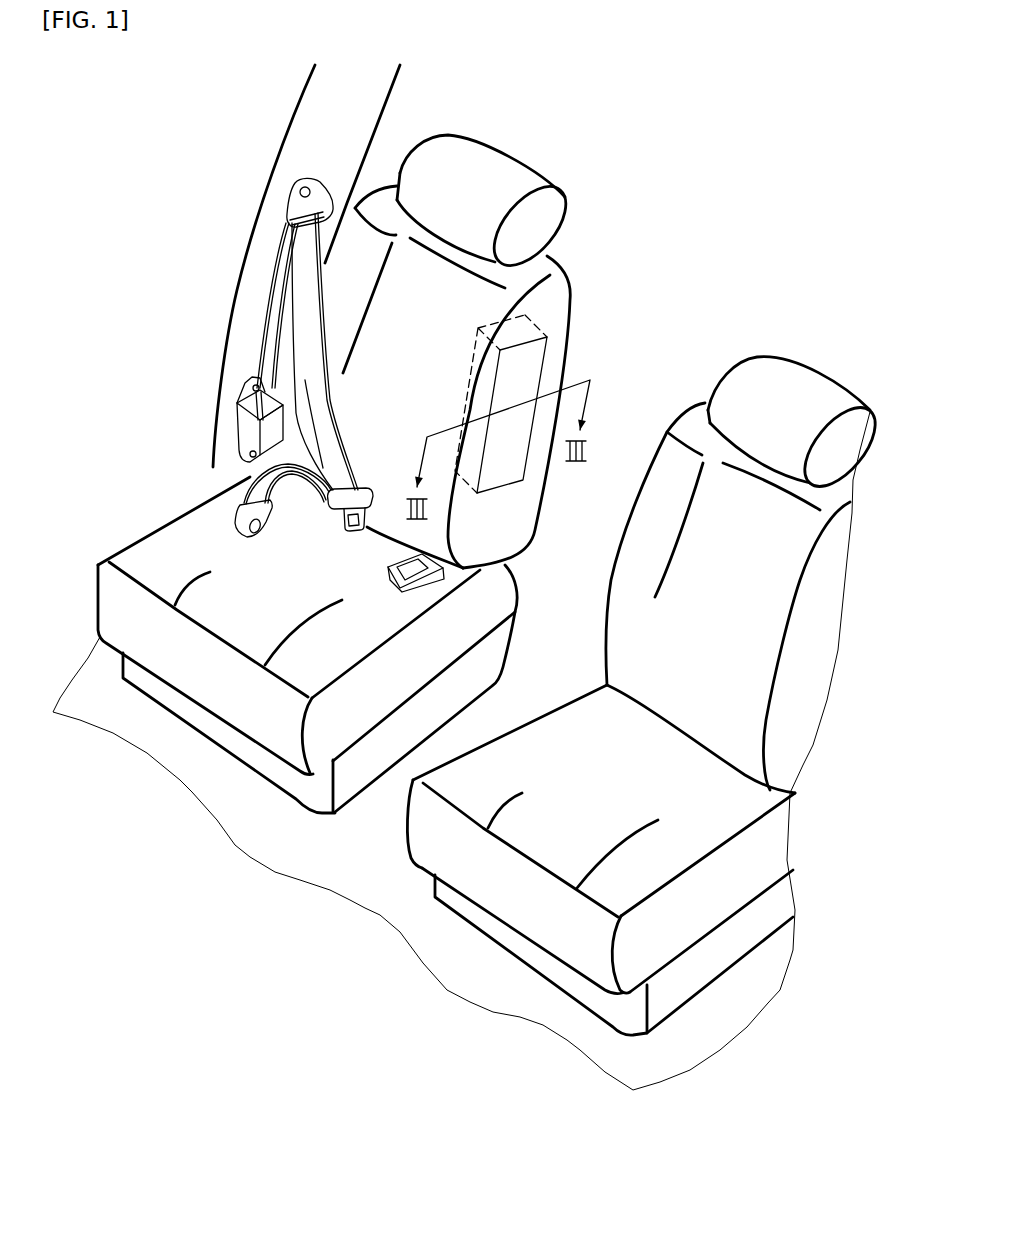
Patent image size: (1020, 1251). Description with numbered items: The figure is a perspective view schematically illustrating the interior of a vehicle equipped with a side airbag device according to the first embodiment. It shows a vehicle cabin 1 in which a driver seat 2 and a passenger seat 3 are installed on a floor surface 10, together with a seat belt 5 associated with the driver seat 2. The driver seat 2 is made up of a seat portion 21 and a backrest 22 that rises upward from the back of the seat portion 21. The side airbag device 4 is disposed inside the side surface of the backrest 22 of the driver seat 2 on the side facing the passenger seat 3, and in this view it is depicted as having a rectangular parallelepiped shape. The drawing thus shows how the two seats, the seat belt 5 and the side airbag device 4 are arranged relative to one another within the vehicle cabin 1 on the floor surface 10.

The vehicle cabin 1 is at (128, 89).
The driver seat 2 is at (514, 146).
The passenger seat 3 is at (827, 369).
The side airbag device 4 is at (547, 347).
The seat belt 5 is at (300, 190).
The floor surface 10 is at (401, 921).
The seat portion 21 is at (333, 728).
The backrest 22 is at (573, 273).